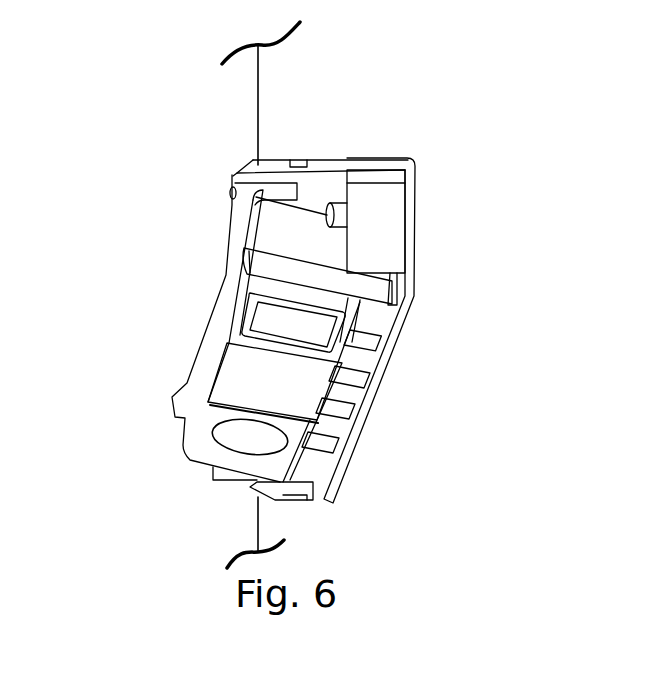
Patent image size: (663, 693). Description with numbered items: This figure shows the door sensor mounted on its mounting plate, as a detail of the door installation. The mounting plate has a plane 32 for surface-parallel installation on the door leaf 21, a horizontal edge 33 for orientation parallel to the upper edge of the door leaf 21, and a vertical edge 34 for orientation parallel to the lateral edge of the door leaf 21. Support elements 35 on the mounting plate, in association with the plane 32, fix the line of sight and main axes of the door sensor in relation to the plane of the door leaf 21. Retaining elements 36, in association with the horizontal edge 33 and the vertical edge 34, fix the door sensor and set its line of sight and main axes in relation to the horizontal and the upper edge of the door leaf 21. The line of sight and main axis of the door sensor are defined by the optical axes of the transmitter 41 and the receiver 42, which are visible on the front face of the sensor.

The door leaf 21 is at (328, 88).
The plane 32 is at (375, 318).
The horizontal edge 33 is at (357, 158).
The vertical edge 34 is at (409, 198).
The support elements 35 is at (345, 408).
The retaining elements 36 is at (328, 269).
The transmitter 41 is at (297, 325).
The receiver 42 is at (253, 434).